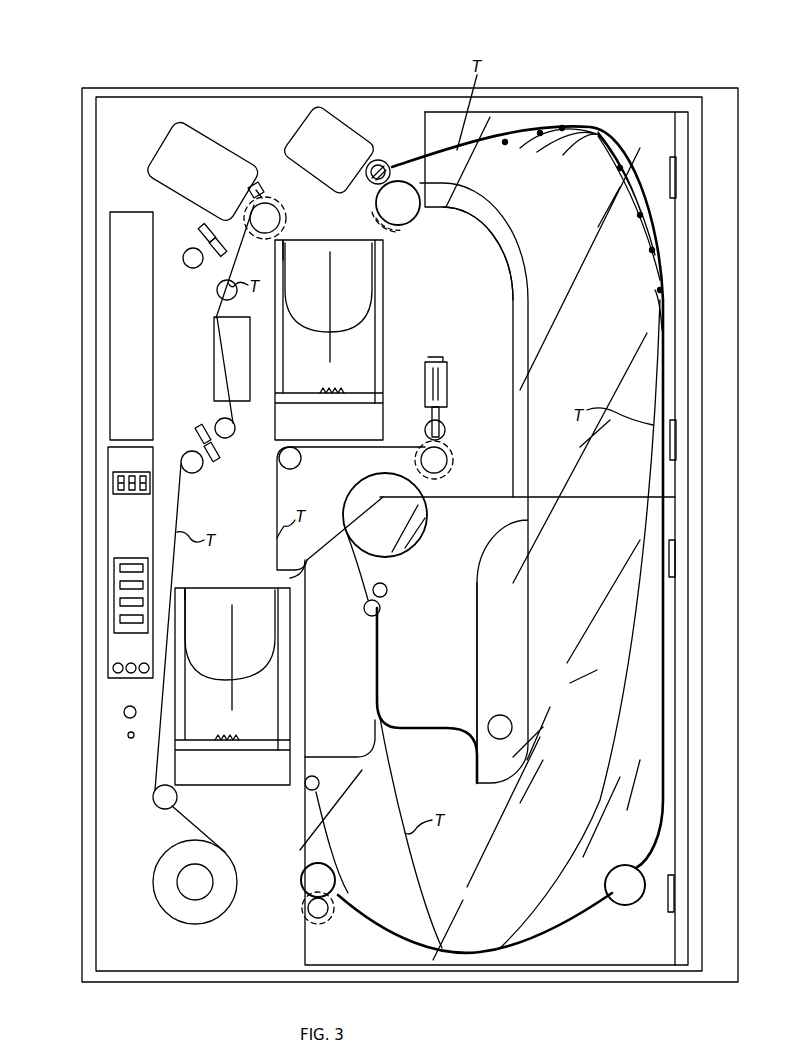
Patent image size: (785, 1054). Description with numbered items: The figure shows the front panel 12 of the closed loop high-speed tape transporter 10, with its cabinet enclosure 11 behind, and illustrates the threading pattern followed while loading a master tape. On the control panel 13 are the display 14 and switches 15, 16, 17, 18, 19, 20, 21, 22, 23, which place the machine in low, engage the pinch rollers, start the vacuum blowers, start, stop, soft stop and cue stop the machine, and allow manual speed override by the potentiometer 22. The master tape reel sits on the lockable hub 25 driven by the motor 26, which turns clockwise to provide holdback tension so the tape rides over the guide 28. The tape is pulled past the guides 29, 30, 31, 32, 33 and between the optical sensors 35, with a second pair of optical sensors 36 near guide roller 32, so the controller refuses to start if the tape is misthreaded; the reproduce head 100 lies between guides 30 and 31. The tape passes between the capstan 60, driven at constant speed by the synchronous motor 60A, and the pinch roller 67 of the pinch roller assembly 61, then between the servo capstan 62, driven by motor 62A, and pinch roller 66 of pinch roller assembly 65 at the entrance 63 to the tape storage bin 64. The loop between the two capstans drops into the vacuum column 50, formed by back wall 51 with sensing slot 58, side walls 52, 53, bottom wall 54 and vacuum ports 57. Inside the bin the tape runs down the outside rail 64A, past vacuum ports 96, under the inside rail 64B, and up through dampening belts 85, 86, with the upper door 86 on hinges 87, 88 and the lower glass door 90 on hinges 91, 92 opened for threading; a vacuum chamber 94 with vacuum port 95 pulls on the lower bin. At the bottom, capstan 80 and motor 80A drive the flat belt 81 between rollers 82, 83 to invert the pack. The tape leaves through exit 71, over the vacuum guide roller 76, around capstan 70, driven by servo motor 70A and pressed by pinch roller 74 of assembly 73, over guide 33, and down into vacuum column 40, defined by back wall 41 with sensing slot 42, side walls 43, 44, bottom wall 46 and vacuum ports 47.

The tape transporter 10 is at (204, 63).
The cabinet enclosure 11 is at (346, 88).
The front panel 12 is at (128, 110).
The control panel 13 is at (113, 484).
The display 14 is at (112, 460).
The switch 15 is at (118, 663).
The switch 16 is at (131, 663).
The switch 17 is at (144, 662).
The start switch 18 is at (120, 568).
The switch 19 is at (120, 585).
The soft stop switch 20 is at (120, 602).
The cue stop switch 21 is at (120, 619).
The potentiometer 22 is at (124, 712).
The switch 23 is at (128, 735).
The lockable hub 25 is at (153, 884).
The motor 26 is at (200, 878).
The guide 28 is at (153, 800).
The guide 29 is at (198, 475).
The guide 30 is at (217, 424).
The guide 31 is at (217, 295).
The guide roller 32 is at (190, 270).
The guide 33 is at (297, 466).
The optical sensors 35 is at (215, 458).
The optical sensors 36 is at (228, 245).
The vacuum column 40 is at (265, 592).
The back wall 41 is at (214, 643).
The sensing slot 42 is at (236, 655).
The side wall 43 is at (184, 592).
The side wall 44 is at (308, 565).
The bottom wall 46 is at (262, 760).
The vacuum ports 47 is at (224, 752).
The vacuum column 50 is at (350, 250).
The back wall 51 is at (314, 280).
The side wall 52 is at (283, 255).
The side wall 53 is at (385, 234).
The bottom wall 54 is at (368, 400).
The vacuum ports 57 is at (322, 398).
The sensing slot 58 is at (353, 348).
The capstan 60 is at (276, 205).
The synchronous electric motor 60A is at (287, 212).
The pinch roller assembly 61 is at (205, 150).
The capstan 62 is at (412, 220).
The servo-controlled motor 62A is at (422, 252).
The entrance 63 is at (406, 165).
The tape storage bin 64 is at (597, 365).
The side rail 64A is at (655, 293).
The side rail 64B is at (545, 318).
The pinch roller assembly 65 is at (329, 151).
The pinch roller 66 is at (384, 162).
The pinch roller 67 is at (260, 185).
The capstan 70 is at (446, 452).
The servo motor 70A is at (450, 470).
The exit 71 is at (366, 606).
The pinch roller assembly 73 is at (446, 385).
The pinch roller 74 is at (446, 420).
The vacuum guide roller 76 is at (400, 560).
The capstan 80 is at (306, 912).
The variable speed motor 80A is at (334, 912).
The flat belt 81 is at (495, 950).
The roller 82 is at (300, 884).
The roller 83 is at (623, 888).
The dampening belt 85 is at (415, 736).
The dampening belt 86 is at (633, 257).
The hinge 87 is at (678, 188).
The hinge 88 is at (680, 445).
The glass door 90 is at (645, 612).
The hinge 91 is at (680, 560).
The hinge 92 is at (680, 892).
The vacuum chamber 94 is at (480, 632).
The vacuum port 95 is at (508, 726).
The vacuum ports 96 is at (597, 130).
The reproduce head 100 is at (213, 380).